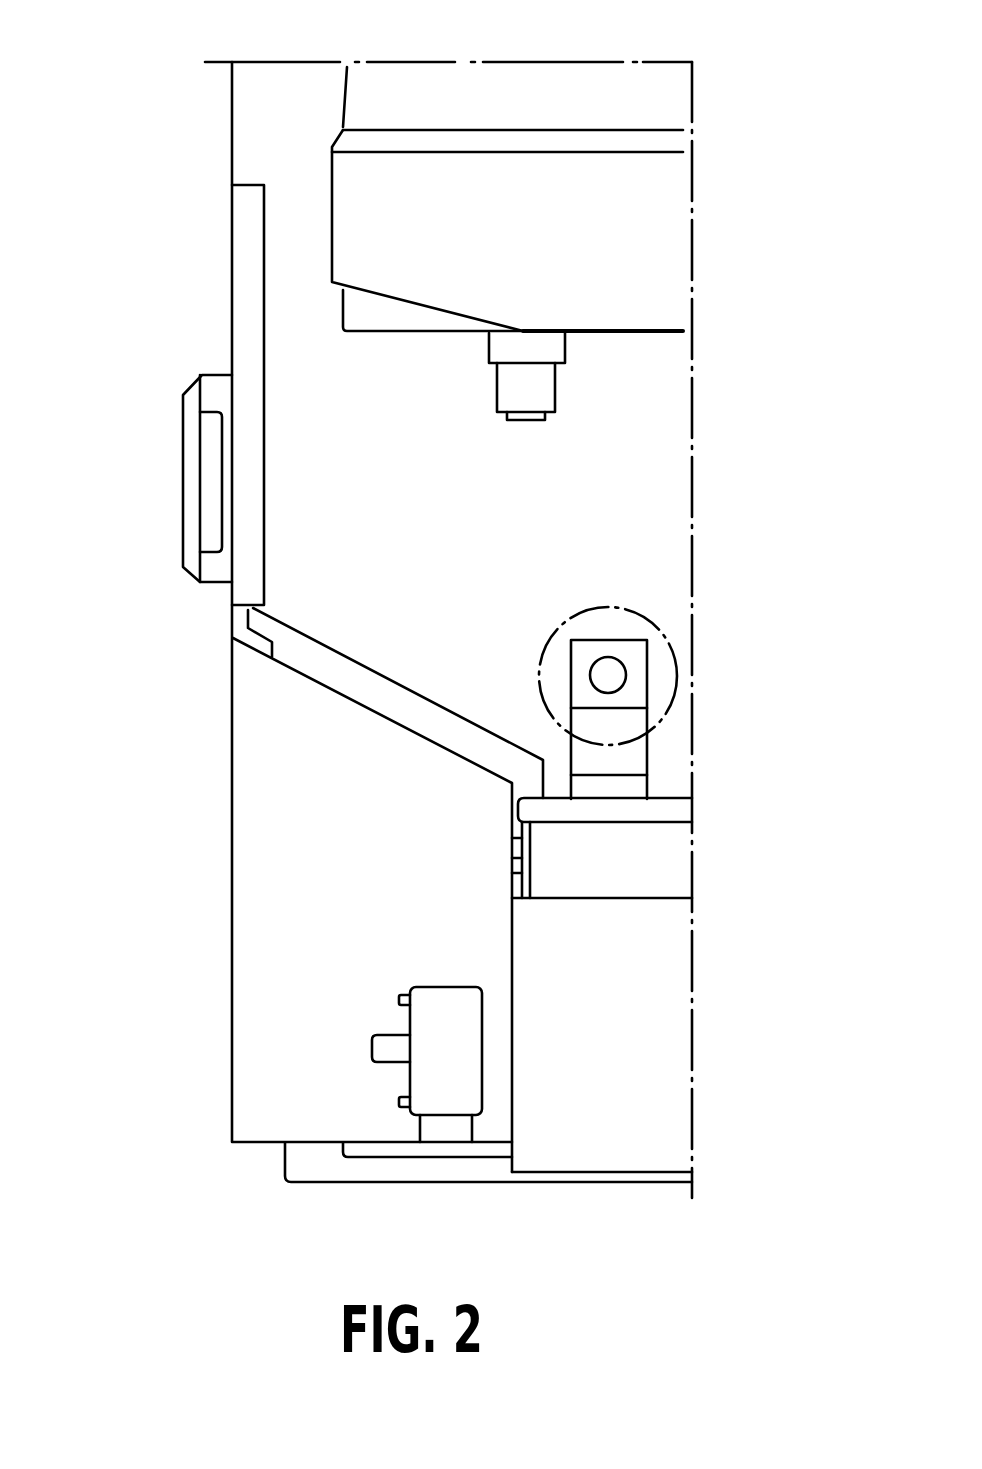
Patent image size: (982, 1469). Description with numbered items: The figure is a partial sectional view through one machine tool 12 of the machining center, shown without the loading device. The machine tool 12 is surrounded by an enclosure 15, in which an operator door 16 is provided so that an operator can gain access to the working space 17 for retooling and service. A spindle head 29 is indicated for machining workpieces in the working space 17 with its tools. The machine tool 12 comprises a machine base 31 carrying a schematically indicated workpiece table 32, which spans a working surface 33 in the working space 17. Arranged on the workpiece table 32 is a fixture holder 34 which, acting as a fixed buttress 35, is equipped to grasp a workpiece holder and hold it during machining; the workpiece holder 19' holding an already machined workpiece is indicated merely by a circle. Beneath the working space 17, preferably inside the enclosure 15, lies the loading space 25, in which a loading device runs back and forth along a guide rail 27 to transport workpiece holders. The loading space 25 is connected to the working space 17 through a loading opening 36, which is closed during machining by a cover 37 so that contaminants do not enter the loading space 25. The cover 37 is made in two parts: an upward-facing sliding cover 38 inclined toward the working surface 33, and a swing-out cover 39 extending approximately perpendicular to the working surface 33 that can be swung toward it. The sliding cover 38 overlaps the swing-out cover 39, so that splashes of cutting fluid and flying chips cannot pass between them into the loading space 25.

The machine tool 12 is at (478, 83).
The enclosure 15 is at (236, 1108).
The operator door 16 is at (248, 322).
The working space 17 is at (563, 486).
The workpiece holder 19' is at (664, 637).
The loading space 25 is at (323, 873).
The guide rail 27 is at (445, 1072).
The spindle head 29 is at (635, 242).
The machine base 31 is at (643, 985).
The workpiece table 32 is at (658, 858).
The working surface 33 is at (667, 788).
The fixture holder 34 is at (628, 757).
The fixed buttress 35 is at (632, 697).
The loading opening 36 is at (405, 710).
The cover 37 is at (443, 648).
The sliding cover 38 is at (343, 665).
The swing-out cover 39 is at (513, 842).